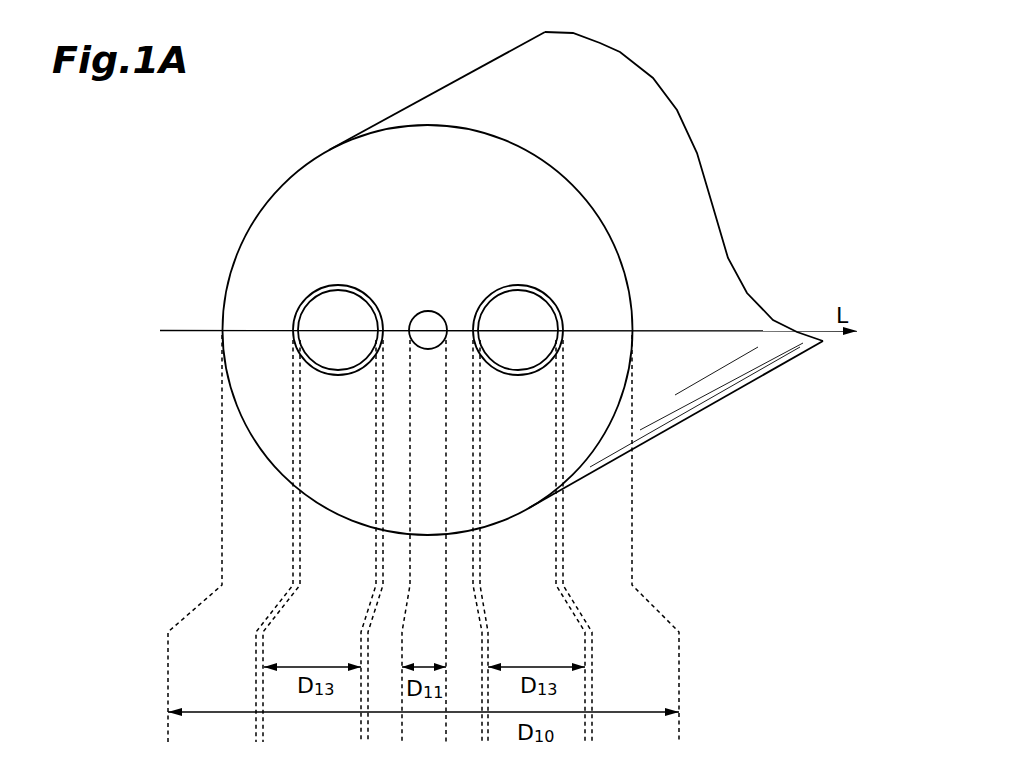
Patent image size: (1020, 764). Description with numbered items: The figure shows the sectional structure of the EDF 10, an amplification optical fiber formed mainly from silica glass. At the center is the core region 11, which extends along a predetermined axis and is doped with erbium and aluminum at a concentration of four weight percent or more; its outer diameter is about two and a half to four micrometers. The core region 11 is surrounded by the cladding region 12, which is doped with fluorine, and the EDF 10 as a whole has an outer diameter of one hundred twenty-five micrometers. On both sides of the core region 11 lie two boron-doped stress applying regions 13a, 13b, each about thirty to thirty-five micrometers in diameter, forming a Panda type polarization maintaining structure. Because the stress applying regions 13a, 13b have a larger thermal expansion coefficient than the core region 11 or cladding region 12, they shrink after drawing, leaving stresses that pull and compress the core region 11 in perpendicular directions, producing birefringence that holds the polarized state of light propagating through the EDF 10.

The EDF 10 is at (661, 111).
The core region 11 is at (432, 312).
The cladding region 12 is at (593, 260).
The stress applying region 13a is at (563, 331).
The stress applying region 13b is at (317, 314).